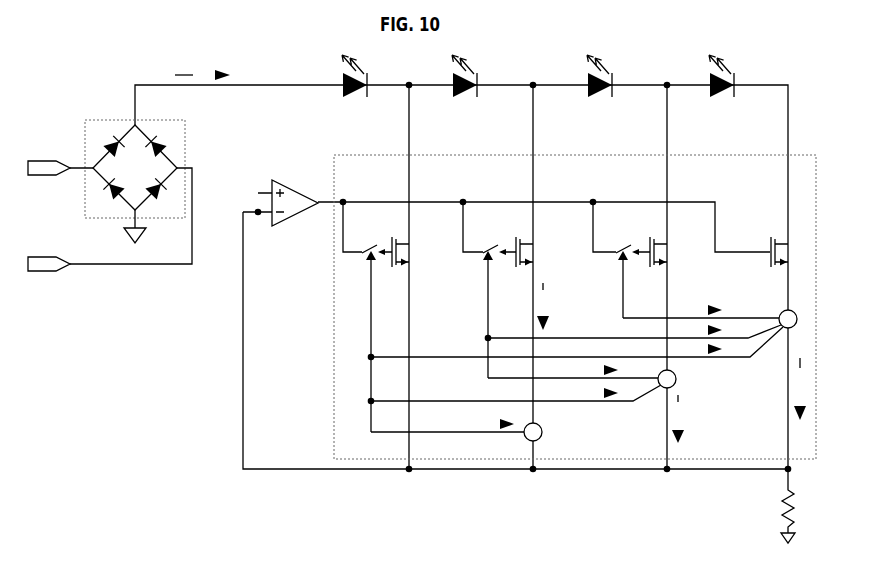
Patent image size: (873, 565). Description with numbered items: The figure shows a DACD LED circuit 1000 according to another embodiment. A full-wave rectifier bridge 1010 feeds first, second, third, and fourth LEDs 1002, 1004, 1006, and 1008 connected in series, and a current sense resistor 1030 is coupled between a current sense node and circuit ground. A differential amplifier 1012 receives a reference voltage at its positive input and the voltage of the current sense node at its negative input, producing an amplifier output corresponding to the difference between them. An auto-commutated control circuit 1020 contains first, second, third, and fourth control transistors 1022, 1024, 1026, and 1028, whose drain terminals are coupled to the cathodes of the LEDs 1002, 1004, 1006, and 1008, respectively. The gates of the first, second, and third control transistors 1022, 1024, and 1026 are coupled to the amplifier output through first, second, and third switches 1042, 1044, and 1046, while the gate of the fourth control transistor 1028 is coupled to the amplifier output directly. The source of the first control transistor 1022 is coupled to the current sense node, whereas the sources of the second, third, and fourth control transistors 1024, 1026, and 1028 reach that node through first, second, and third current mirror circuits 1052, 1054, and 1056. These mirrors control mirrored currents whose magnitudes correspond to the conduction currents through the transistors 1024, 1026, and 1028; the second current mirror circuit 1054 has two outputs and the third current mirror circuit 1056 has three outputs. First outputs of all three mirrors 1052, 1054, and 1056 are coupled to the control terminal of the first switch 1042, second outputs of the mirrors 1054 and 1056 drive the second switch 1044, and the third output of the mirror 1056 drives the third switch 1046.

The DACD LED circuit 1000 is at (163, 47).
The first LED 1002 is at (343, 78).
The second LED 1004 is at (453, 78).
The third LED 1006 is at (588, 78).
The fourth LED 1008 is at (710, 78).
The full-wave rectifier bridge 1010 is at (115, 120).
The differential amplifier 1012 is at (272, 182).
The auto-commutated control circuit 1020 is at (334, 176).
The first control transistor 1022 is at (392, 245).
The second control transistor 1024 is at (515, 245).
The third control transistor 1026 is at (648, 245).
The fourth control transistor 1028 is at (770, 245).
The current sense resistor 1030 is at (781, 499).
The first switch 1042 is at (362, 252).
The second switch 1044 is at (483, 252).
The third switch 1046 is at (616, 252).
The first current mirror circuit 1052 is at (524, 435).
The second current mirror circuit 1054 is at (678, 382).
The third current mirror circuit 1056 is at (780, 312).